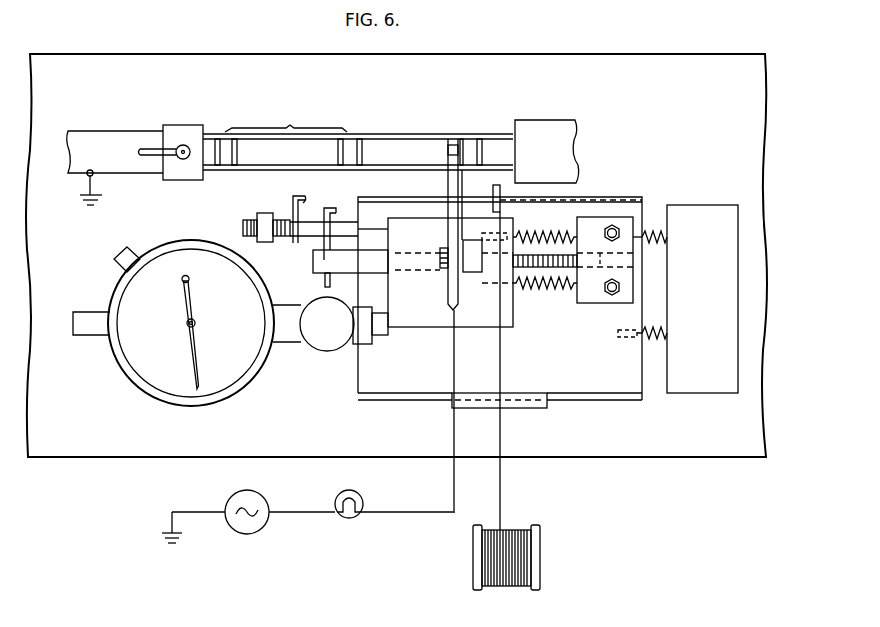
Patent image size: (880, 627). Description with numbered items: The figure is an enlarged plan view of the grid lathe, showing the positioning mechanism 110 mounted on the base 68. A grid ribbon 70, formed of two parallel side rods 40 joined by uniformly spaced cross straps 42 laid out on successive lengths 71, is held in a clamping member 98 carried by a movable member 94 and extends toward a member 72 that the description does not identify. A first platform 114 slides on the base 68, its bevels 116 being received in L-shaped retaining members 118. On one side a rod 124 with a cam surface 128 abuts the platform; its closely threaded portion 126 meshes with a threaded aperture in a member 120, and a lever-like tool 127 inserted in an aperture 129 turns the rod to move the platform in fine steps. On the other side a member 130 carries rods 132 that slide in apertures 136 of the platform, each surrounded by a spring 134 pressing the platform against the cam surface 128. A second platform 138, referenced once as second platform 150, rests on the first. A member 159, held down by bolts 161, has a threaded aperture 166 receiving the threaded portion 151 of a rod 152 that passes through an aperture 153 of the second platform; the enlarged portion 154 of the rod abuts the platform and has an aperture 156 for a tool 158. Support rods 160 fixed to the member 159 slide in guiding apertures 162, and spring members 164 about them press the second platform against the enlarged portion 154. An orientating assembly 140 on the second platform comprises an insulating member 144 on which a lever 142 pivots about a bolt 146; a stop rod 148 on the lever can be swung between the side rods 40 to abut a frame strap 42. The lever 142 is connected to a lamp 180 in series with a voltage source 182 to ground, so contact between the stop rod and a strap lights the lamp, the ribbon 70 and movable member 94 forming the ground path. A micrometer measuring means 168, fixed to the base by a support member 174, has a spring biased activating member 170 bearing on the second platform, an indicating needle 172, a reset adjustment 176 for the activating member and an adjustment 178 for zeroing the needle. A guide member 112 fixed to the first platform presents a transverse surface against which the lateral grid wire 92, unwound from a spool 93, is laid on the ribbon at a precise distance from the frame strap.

The side rods 40 is at (278, 139).
The cross straps 42 is at (467, 135).
The base 68 is at (756, 434).
The ribbon 70 is at (407, 124).
The lengths 71 is at (286, 117).
The end block 72 is at (528, 120).
The lateral grid wire 92 is at (500, 477).
The spool 93 is at (541, 550).
The movable member 94 is at (106, 132).
The clamping member 98 is at (180, 125).
The positioning mechanism 110 is at (106, 43).
The guide member 112 is at (500, 212).
The first platform 114 is at (357, 388).
The bevels 116 is at (378, 397).
The L-shaped retaining members 118 is at (545, 406).
The member 120 is at (277, 208).
The rod 124 is at (343, 216).
The threaded portion 126 is at (243, 222).
The lever-like tool 127 is at (309, 190).
The cam surface 128 is at (358, 229).
The aperture 129 is at (290, 243).
The member 130 is at (670, 393).
The rods 132 is at (665, 328).
The spring 134 is at (665, 340).
The apertures 136 is at (620, 339).
The second platform 138 is at (547, 346).
The orientating assembly 140 is at (497, 189).
The lever 142 is at (448, 187).
The member 144 is at (488, 246).
The bolt 146 is at (500, 283).
The stop rod 148 is at (455, 141).
The second platform 150 is at (448, 152).
The threaded portion 151 is at (440, 249).
The rod 152 is at (420, 240).
The aperture 153 is at (437, 252).
The enlarged portion 154 is at (377, 275).
The aperture 156 is at (325, 285).
The tool 158 is at (314, 247).
The member 159 is at (593, 222).
The support rods 160 is at (557, 290).
The bolts 161 is at (617, 227).
The guiding apertures 162 is at (497, 290).
The spring member 164 is at (547, 233).
The threaded aperture 166 is at (598, 287).
The measuring means 168 is at (124, 403).
The activating member 170 is at (381, 344).
The indicating needle 172 is at (195, 367).
The support member 174 is at (308, 343).
The reset adjustment 176 is at (84, 327).
The adjustment 178 is at (127, 247).
The lamp 180 is at (349, 490).
The voltage source 182 is at (247, 490).